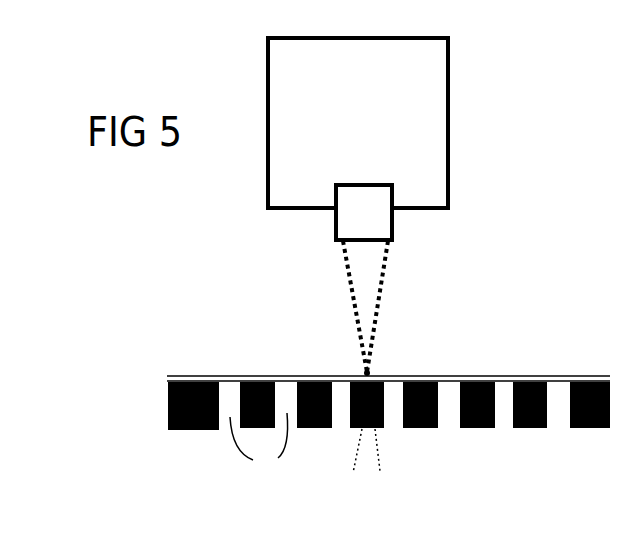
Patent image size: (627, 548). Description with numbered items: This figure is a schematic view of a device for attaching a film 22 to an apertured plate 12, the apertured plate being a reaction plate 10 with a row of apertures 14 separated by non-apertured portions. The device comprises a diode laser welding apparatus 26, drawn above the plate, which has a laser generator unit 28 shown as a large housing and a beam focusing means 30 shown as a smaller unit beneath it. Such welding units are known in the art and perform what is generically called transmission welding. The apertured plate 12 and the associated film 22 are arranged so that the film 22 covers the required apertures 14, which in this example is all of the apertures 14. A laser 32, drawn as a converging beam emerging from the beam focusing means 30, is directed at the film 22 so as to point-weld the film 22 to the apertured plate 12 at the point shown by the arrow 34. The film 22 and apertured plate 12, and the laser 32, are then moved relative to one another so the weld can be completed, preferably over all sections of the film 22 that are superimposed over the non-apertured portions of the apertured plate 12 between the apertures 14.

The reaction plate 10 is at (346, 406).
The apertured plate 12 is at (168, 409).
The apertures 14 is at (259, 448).
The film 22 is at (472, 377).
The diode laser welding apparatus 26 is at (417, 207).
The laser generator unit 28 is at (449, 166).
The beam focusing means 30 is at (336, 227).
The laser 32 is at (378, 295).
The arrow 34 is at (340, 357).